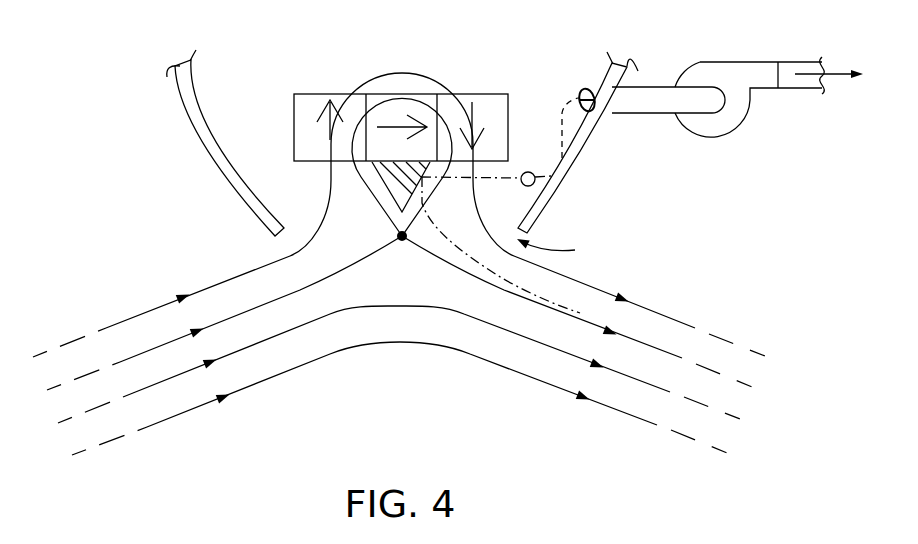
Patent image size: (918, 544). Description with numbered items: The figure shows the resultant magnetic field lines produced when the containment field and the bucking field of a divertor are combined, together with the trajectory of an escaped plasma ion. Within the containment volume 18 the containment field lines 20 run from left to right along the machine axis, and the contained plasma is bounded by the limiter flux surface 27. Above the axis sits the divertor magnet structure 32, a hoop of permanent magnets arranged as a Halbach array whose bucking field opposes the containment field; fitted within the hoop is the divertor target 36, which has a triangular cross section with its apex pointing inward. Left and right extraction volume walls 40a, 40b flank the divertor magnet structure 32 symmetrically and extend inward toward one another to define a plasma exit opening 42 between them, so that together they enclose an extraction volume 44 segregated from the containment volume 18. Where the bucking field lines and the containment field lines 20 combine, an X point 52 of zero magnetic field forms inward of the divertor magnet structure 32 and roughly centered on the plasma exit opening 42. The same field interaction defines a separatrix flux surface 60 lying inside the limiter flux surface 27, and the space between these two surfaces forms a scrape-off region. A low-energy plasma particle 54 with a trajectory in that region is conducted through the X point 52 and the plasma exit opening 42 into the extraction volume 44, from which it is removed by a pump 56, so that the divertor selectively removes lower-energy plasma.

The containment volume 18 is at (704, 274).
The containment field lines 20 is at (188, 375).
The limiter flux surface 27 is at (146, 312).
The divertor magnet structure 32 is at (490, 73).
The divertor target 36 is at (395, 172).
The left extraction volume wall 40a is at (195, 121).
The right extraction volume wall 40b is at (583, 168).
The plasma exit opening 42 is at (563, 253).
The extraction volume 44 is at (249, 84).
The X point 52 is at (404, 241).
The low-energy plasma particle 54 is at (531, 171).
The pump 56 is at (742, 60).
The separatrix flux surface 60 is at (188, 375).